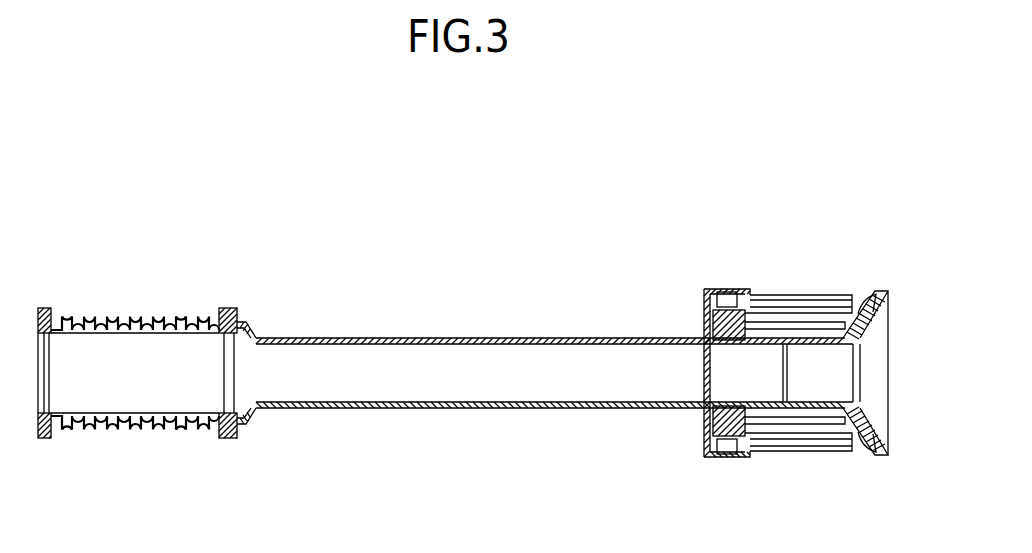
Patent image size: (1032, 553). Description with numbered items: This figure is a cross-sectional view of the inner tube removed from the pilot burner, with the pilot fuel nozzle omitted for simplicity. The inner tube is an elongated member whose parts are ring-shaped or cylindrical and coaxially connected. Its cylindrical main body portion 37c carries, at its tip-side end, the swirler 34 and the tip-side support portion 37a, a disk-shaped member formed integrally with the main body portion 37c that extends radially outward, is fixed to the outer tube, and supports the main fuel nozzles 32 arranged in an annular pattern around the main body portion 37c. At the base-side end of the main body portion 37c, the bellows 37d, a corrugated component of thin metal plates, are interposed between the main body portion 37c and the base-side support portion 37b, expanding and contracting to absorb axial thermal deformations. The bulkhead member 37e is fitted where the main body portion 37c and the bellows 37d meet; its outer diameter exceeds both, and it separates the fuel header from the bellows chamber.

The main fuel nozzles 32 is at (790, 448).
The swirler 34 is at (889, 376).
The tip-side support portion 37a is at (725, 455).
The base-side support portion 37b is at (44, 438).
The main body portion 37c is at (570, 409).
The bellows 37d is at (137, 437).
The bulkhead member 37e is at (227, 438).